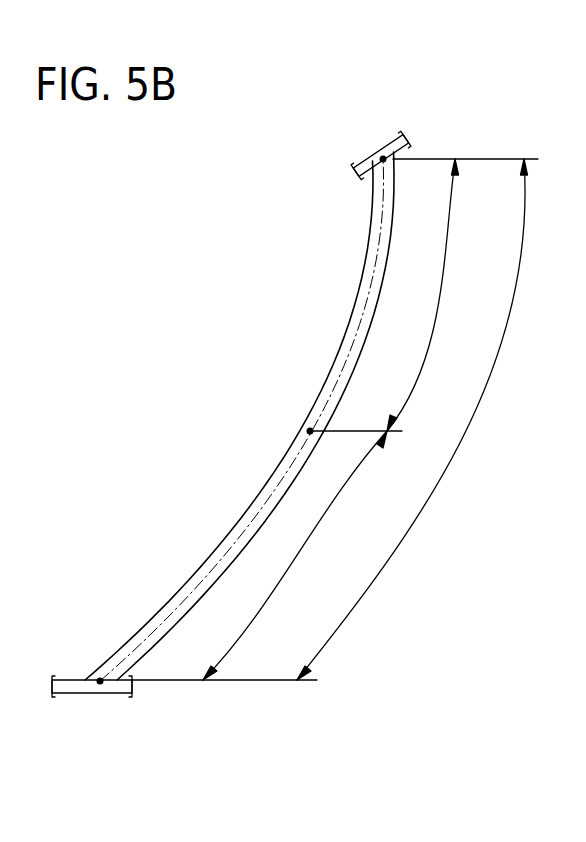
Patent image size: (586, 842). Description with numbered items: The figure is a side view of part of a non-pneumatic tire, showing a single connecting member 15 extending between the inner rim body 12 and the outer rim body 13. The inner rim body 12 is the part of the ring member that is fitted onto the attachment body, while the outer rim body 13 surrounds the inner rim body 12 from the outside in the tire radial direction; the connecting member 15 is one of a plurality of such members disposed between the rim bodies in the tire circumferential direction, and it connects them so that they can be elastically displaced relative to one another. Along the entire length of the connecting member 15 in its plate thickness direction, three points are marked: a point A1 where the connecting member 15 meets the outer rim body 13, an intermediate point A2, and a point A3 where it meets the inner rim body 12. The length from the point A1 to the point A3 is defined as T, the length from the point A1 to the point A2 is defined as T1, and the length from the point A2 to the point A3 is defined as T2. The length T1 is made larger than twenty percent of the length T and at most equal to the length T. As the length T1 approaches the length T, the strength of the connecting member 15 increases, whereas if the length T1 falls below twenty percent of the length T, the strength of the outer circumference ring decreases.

The inner rim body 12 is at (388, 143).
The outer rim body 13 is at (75, 693).
The connecting member 15 is at (350, 317).
The point A1 is at (100, 681).
The point A2 is at (310, 431).
The point A3 is at (383, 159).
The length T is at (412, 419).
The length T1 is at (295, 555).
The length T2 is at (431, 295).